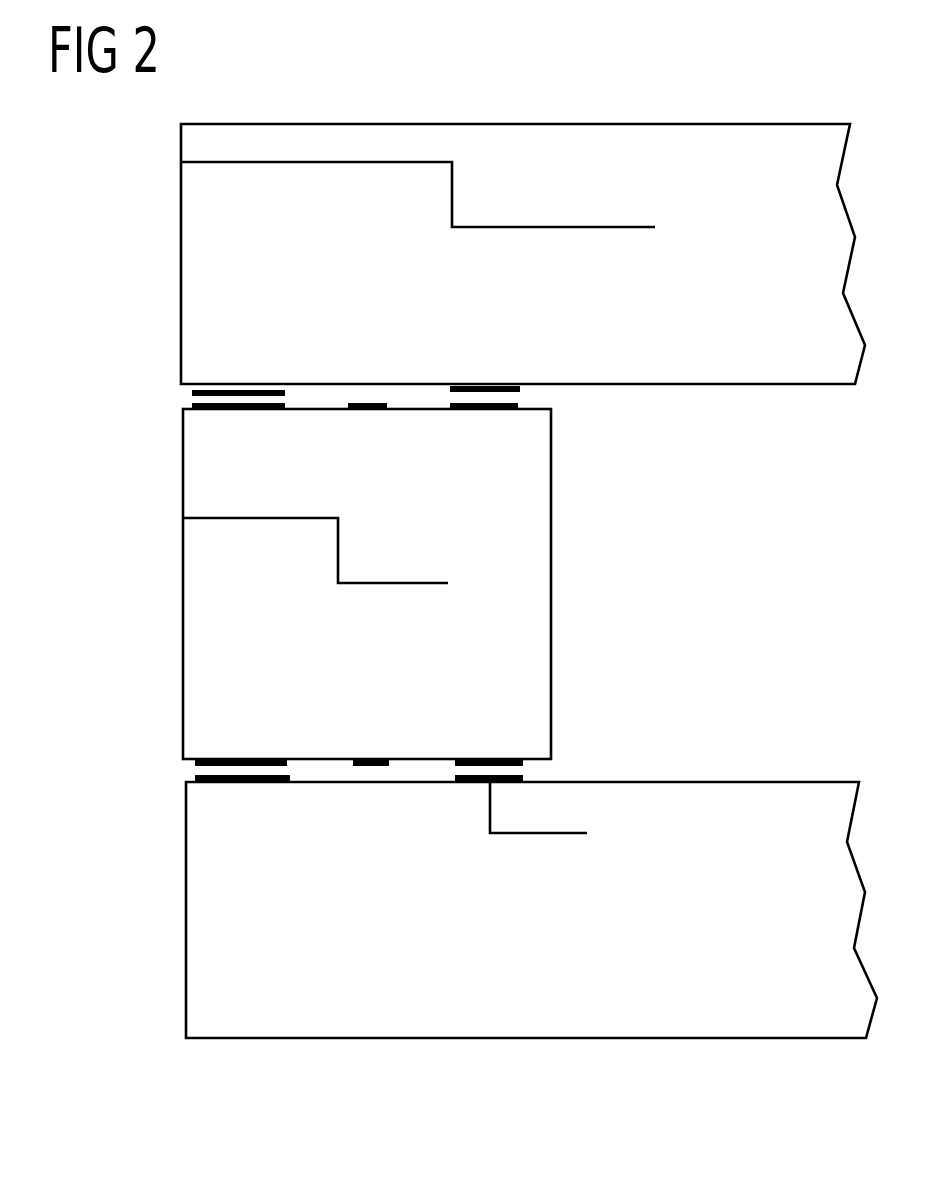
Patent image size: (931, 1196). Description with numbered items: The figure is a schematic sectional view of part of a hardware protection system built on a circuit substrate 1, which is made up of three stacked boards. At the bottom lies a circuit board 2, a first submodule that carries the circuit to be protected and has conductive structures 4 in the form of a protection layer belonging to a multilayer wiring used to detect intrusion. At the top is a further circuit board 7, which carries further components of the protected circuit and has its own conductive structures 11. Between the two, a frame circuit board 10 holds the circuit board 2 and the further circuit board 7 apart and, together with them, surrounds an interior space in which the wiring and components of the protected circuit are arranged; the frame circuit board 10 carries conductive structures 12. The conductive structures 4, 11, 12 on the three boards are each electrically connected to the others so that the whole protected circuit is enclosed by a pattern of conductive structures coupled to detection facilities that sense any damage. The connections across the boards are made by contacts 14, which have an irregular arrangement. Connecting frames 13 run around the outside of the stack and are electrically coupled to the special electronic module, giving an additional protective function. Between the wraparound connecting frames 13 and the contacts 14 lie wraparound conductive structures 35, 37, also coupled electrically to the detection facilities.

The circuit substrate 1 is at (103, 170).
The circuit board 2 is at (195, 904).
The conductive structures 4 is at (545, 838).
The further circuit board 7 is at (193, 290).
The frame circuit board 10 is at (193, 456).
The conductive structures 11 is at (272, 160).
The conductive structures 12 is at (216, 519).
The connecting frames 13 is at (241, 388).
The contacts 14 is at (483, 388).
The wraparound conductive structure 35 is at (366, 412).
The wraparound conductive structure 37 is at (369, 758).